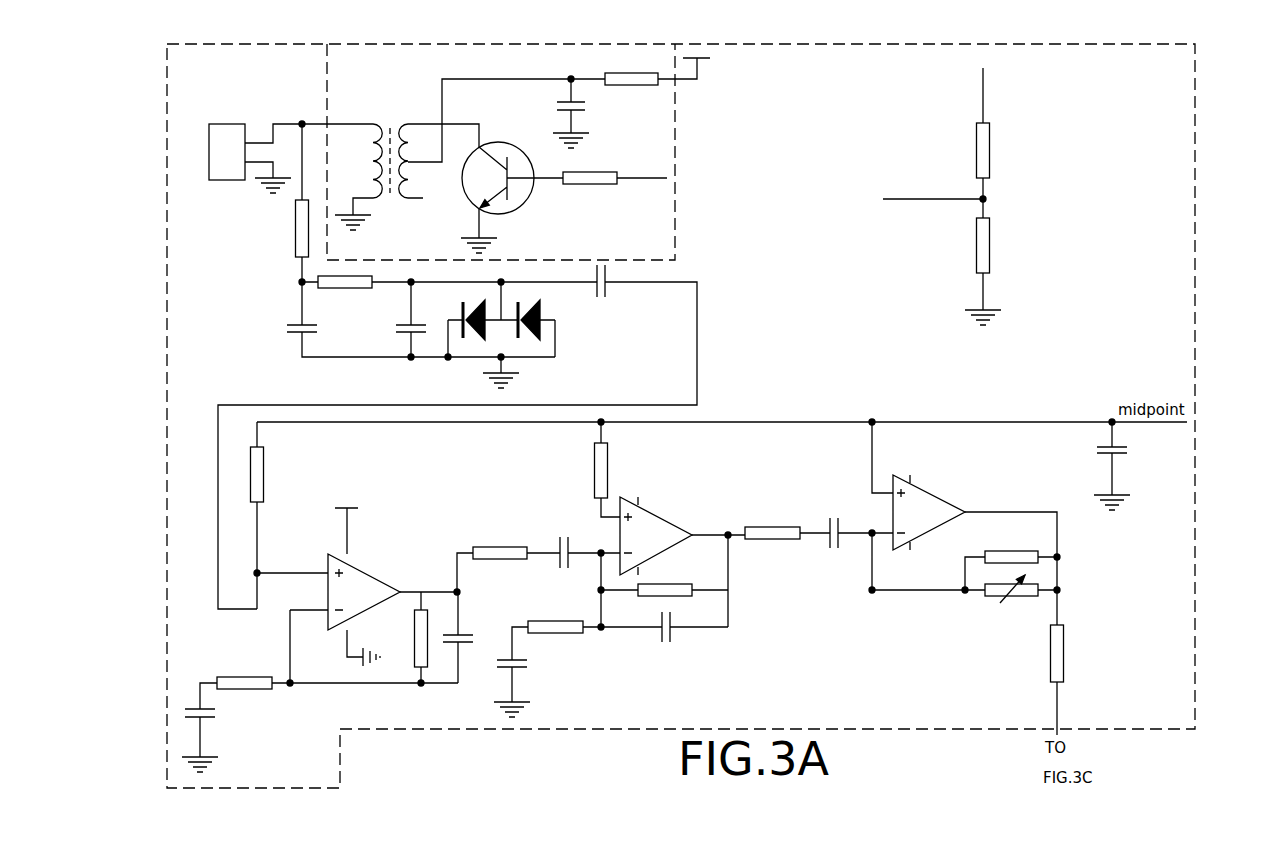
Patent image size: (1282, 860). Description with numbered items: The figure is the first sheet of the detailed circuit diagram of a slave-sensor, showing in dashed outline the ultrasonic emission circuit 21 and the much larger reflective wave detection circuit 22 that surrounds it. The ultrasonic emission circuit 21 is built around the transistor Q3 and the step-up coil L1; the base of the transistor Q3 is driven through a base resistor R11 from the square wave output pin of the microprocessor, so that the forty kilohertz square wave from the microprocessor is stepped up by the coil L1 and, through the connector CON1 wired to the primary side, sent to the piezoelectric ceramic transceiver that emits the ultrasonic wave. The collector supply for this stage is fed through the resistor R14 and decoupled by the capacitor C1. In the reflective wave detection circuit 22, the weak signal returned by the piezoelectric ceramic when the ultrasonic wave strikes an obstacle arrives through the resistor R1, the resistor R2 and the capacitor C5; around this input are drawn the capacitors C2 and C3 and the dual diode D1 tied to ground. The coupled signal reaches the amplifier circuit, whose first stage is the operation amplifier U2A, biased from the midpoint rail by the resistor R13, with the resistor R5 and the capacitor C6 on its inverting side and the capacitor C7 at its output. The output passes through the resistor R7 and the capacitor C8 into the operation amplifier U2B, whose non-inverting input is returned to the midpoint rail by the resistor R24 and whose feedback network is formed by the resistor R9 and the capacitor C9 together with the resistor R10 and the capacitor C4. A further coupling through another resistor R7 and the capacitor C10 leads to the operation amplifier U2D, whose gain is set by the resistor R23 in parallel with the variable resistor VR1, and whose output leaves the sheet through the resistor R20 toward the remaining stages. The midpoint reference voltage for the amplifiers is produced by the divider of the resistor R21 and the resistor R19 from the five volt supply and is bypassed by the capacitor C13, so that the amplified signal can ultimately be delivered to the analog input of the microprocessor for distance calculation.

The ultrasonic emission circuit 21 is at (673, 207).
The reflective wave detection circuit 22 is at (1192, 210).
The step-up coil L1 is at (453, 154).
The transistor Q3 is at (510, 179).
The resistor R11 510 R11 is at (615, 190).
The capacitor C1 104 C1 is at (587, 112).
The resistor R14 56 R14 is at (660, 74).
The connector CON1 is at (256, 148).
The resistor R1 is at (285, 224).
The capacitor C2 221 C2 is at (406, 318).
The resistor R2 is at (449, 299).
The capacitor C3 101 C3 is at (399, 319).
The dual diode D1 BAV99 D1 is at (520, 326).
The capacitor C5 is at (457, 437).
The resistor R13 47K R13 is at (290, 515).
The operation amplifier U2A is at (366, 587).
The capacitor C7 10P C7 is at (473, 637).
The resistor R5 4.7K R5 is at (236, 675).
The capacitor C6 222 C6 is at (217, 737).
The resistor R7 4.7K R7 is at (508, 561).
The capacitor C8 221 C8 is at (585, 536).
The resistor R24 47K R24 is at (615, 472).
The operation amplifier U2B is at (682, 530).
The resistor R9 150K R9 is at (663, 582).
The capacitor C9 10P C9 is at (664, 646).
The resistor R10 4.7K R10 is at (556, 623).
The capacitor C4 222 C4 is at (526, 685).
The capacitor C10 102 C10 is at (819, 542).
The op-amp U2D 074 U2D is at (954, 523).
The resistor R23 100K R23 is at (964, 555).
The variable resistor VR1 100K VR1 is at (1012, 607).
The resistor R20 0 R20 is at (1074, 680).
The capacitor C13 104 C13 is at (1096, 466).
The resistor R21 4.7K R21 is at (955, 135).
The resistor R19 3.9K R19 is at (996, 262).